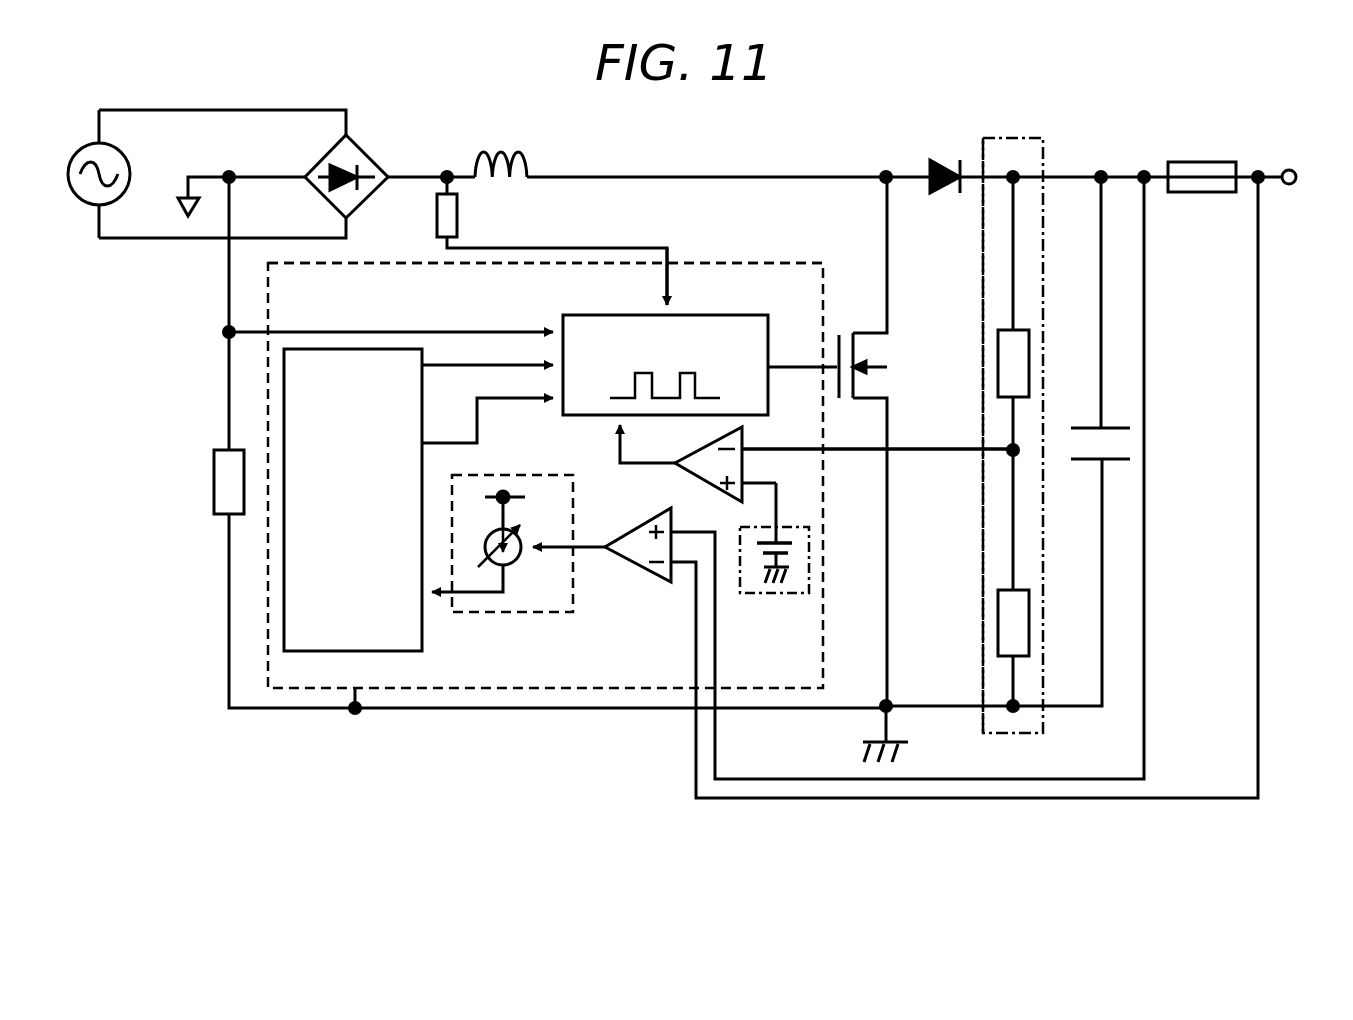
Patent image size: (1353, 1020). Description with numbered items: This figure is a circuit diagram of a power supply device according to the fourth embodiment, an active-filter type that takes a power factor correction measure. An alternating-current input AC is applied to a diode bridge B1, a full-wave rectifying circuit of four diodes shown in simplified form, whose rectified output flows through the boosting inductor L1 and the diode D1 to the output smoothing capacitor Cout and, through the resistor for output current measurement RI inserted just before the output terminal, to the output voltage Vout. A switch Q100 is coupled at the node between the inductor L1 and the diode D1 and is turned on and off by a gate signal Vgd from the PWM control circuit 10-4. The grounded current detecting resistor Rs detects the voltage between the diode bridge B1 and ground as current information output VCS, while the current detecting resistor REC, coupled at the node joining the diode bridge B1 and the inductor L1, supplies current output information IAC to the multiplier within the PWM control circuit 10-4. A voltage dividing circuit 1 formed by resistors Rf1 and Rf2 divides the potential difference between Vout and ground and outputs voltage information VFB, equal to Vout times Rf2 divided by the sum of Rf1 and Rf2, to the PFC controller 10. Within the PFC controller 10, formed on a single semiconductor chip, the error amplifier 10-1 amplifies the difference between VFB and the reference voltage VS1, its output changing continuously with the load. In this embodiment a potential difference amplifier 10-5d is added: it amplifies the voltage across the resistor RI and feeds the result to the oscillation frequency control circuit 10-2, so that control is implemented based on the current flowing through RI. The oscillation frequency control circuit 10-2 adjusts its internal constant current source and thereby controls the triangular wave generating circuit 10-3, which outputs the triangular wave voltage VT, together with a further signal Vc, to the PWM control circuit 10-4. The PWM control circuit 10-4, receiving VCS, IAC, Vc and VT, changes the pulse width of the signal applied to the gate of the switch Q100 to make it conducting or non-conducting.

The AC power source AC is at (105, 160).
The diode bridge B1 is at (351, 168).
The inductor L1 is at (501, 149).
The current detecting resistor REC is at (460, 217).
The diode D1 is at (945, 159).
The resistor for output current measurement RI is at (1202, 161).
The output voltage Vout is at (1316, 177).
The current detecting resistor Rs is at (211, 482).
The PFC controller 10 is at (733, 262).
The current output information IAC is at (663, 283).
The PWM control circuit 10-4 is at (685, 313).
The triangular wave generating circuit 10-3 is at (378, 652).
The current information output VCS is at (391, 319).
The control voltage Vc is at (487, 354).
The triangular wave voltage VT is at (487, 409).
The gate drive voltage Vgd is at (802, 351).
The switch Q100 is at (893, 365).
The error amplifier 10-1 is at (682, 467).
The voltage information VFB is at (877, 435).
The reference voltage VS1 is at (793, 527).
The potential difference amplifier 10-5d is at (640, 567).
The oscillation frequency control circuit 10-2 is at (508, 613).
The resistor Rf1 is at (986, 363).
The resistor Rf2 is at (985, 619).
The output smoothing capacitor Cout is at (1090, 460).
The voltage dividing circuit 1 is at (983, 632).